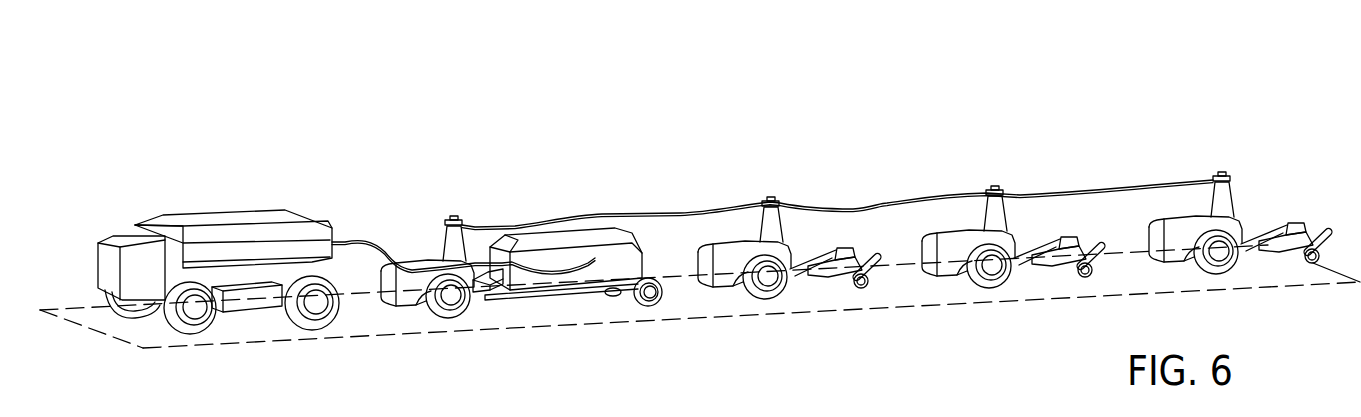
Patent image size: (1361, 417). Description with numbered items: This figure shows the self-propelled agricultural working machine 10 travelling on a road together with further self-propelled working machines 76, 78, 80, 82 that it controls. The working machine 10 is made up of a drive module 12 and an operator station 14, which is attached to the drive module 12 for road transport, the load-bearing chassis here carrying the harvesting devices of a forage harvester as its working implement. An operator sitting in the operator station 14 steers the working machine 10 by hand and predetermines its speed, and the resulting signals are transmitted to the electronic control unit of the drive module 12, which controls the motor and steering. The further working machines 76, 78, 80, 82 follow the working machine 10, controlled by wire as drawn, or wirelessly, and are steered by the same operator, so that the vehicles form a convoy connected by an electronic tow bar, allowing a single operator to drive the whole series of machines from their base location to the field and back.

The self-propelled agricultural working machine 10 is at (204, 155).
The drive module 12 is at (243, 303).
The operator station 14 is at (132, 258).
The further self-propelled working machine 76 is at (538, 152).
The further self-propelled working machine 78 is at (793, 142).
The further self-propelled working machine 80 is at (1008, 147).
The further self-propelled working machine 82 is at (1257, 130).